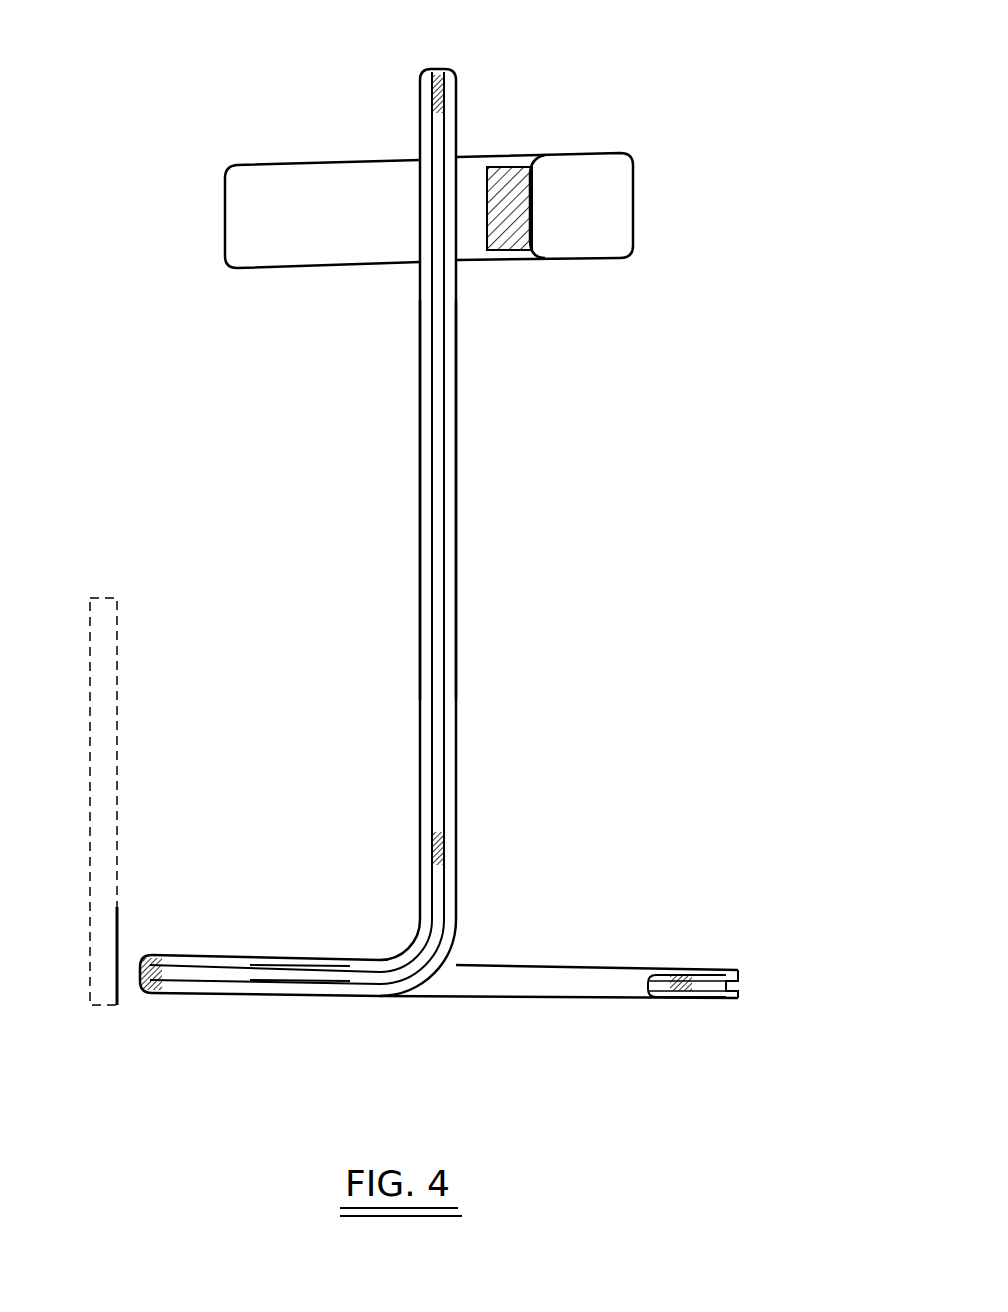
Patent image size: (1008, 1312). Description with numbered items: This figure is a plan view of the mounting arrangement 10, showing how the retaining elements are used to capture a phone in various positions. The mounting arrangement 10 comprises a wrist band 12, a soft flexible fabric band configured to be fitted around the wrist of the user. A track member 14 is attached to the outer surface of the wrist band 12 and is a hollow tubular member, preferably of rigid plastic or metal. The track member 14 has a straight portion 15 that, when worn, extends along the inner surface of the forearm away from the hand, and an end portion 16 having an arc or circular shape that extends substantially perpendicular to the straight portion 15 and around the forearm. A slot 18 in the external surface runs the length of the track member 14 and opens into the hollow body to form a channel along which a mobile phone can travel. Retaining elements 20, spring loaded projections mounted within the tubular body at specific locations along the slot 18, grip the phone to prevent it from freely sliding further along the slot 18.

The mounting arrangement 10 is at (167, 160).
The wrist band 12 is at (608, 218).
The track member 14 is at (417, 83).
The straight portion 15 is at (462, 503).
The end portion 16 is at (532, 1047).
The slot 18 is at (434, 663).
The retaining elements 20 is at (443, 113).